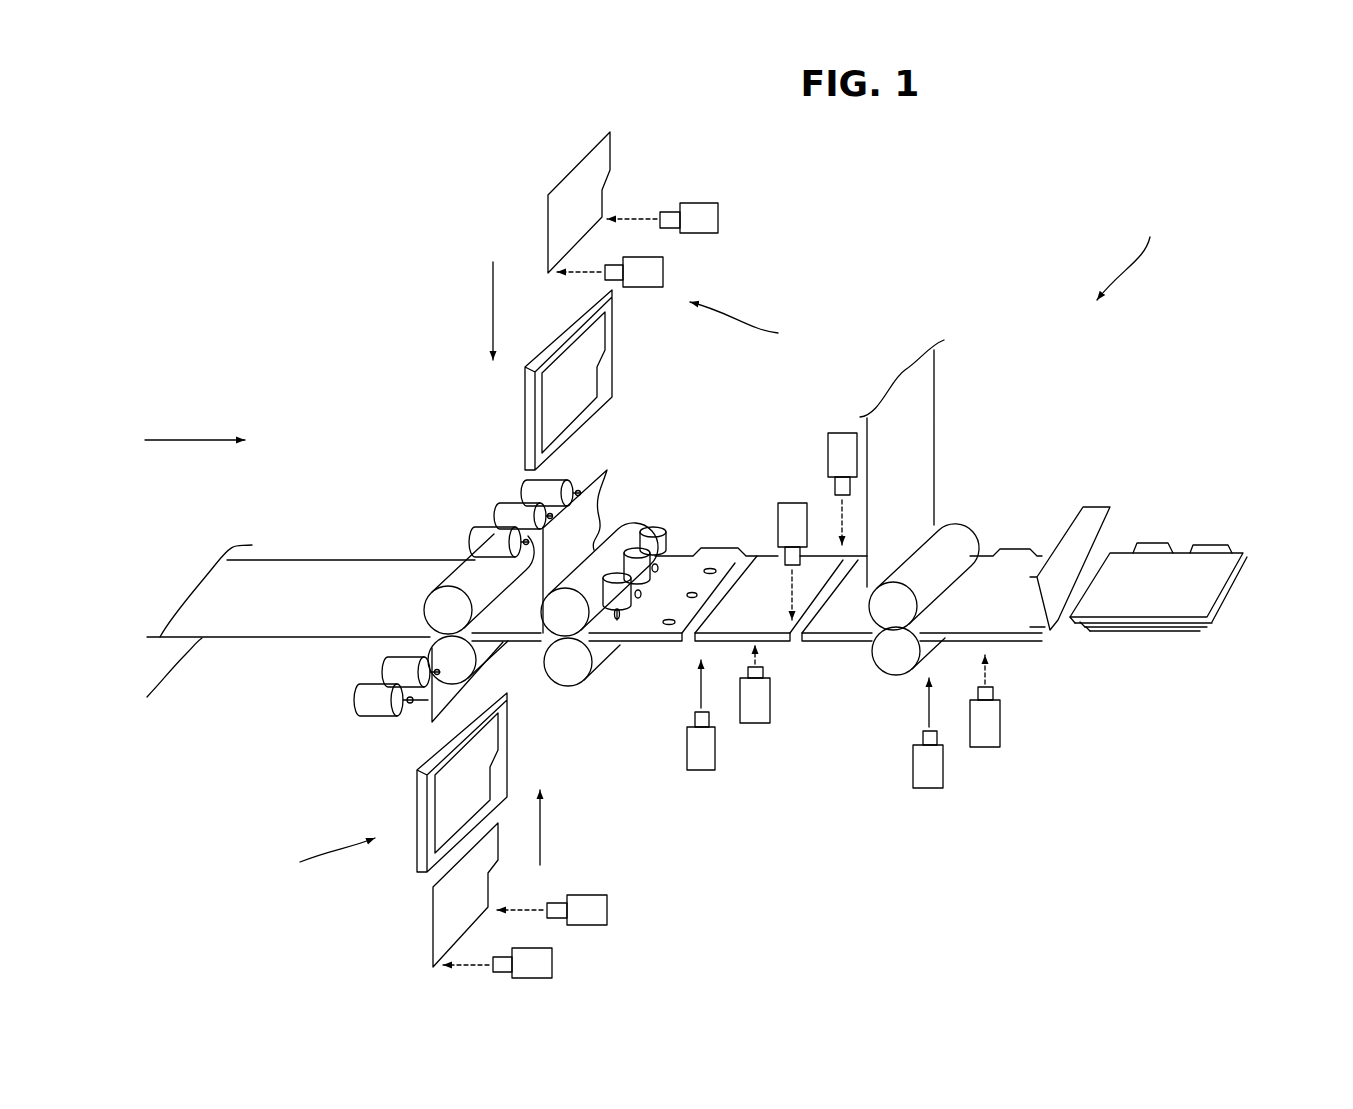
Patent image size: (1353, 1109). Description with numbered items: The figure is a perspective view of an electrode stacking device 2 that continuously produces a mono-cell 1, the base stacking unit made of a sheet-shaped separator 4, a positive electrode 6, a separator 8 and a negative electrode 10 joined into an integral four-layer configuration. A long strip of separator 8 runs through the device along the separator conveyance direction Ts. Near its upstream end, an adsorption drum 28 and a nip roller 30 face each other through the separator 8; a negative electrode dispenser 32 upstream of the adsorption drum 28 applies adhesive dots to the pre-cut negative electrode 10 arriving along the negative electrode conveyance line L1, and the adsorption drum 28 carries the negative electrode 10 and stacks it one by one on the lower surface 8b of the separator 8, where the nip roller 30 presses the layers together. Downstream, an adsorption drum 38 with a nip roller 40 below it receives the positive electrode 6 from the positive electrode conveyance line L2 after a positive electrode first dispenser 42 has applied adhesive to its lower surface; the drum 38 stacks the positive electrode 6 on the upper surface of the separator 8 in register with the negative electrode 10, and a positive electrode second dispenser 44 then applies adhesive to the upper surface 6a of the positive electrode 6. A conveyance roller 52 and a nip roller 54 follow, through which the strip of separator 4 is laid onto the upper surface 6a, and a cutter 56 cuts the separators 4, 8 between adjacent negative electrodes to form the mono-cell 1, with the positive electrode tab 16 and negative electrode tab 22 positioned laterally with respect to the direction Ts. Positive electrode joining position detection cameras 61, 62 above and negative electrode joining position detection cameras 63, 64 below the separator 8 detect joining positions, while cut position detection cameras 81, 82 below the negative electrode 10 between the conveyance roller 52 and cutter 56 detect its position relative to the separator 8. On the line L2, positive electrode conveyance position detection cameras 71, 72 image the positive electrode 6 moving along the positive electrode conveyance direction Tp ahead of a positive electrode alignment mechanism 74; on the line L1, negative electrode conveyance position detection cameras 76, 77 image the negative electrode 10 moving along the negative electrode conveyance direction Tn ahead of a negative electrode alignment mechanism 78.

The mono-cell 1 is at (1242, 525).
The electrode stacking device 2 is at (1129, 254).
The separator 4 is at (917, 388).
The positive electrode 6 is at (565, 377).
The upper surface of the positive electrode 6a is at (600, 173).
The separator 8 is at (277, 572).
The lower surface of the separator 8b is at (161, 685).
The negative electrode 10 is at (433, 703).
The positive electrode tab 16 is at (1148, 545).
The negative electrode tab 22 is at (1212, 548).
The adsorption drum 28 is at (464, 664).
The nip roller 30 is at (472, 570).
The negative electrode dispenser 32 is at (372, 700).
The adsorption drum 38 is at (605, 540).
The nip roller 40 is at (570, 672).
The positive electrode first dispenser 42 is at (522, 515).
The positive electrode second dispenser 44 is at (638, 560).
The conveyance roller 52 is at (888, 658).
The nip roller 54 is at (945, 540).
The cutter 56 is at (1087, 525).
The positive electrode joining position detection camera 61 is at (843, 440).
The positive electrode joining position detection camera 62 is at (795, 512).
The negative electrode joining position detection camera 63 is at (752, 718).
The negative electrode joining position detection camera 64 is at (703, 765).
The positive electrode conveyance position detection camera 71 is at (718, 215).
The positive electrode conveyance position detection camera 72 is at (663, 275).
The positive electrode alignment mechanism 74 is at (610, 377).
The negative electrode conveyance position detection camera 76 is at (607, 912).
The negative electrode conveyance position detection camera 77 is at (552, 965).
The negative electrode alignment mechanism 78 is at (500, 773).
The cut position detection camera 81 is at (982, 730).
The cut position detection camera 82 is at (926, 780).
The negative electrode conveyance line L1 is at (321, 861).
The positive electrode conveyance line L2 is at (747, 329).
The separator conveyance direction Ts is at (195, 456).
The positive electrode conveyance direction Tp is at (481, 311).
The negative electrode conveyance direction Tn is at (555, 827).